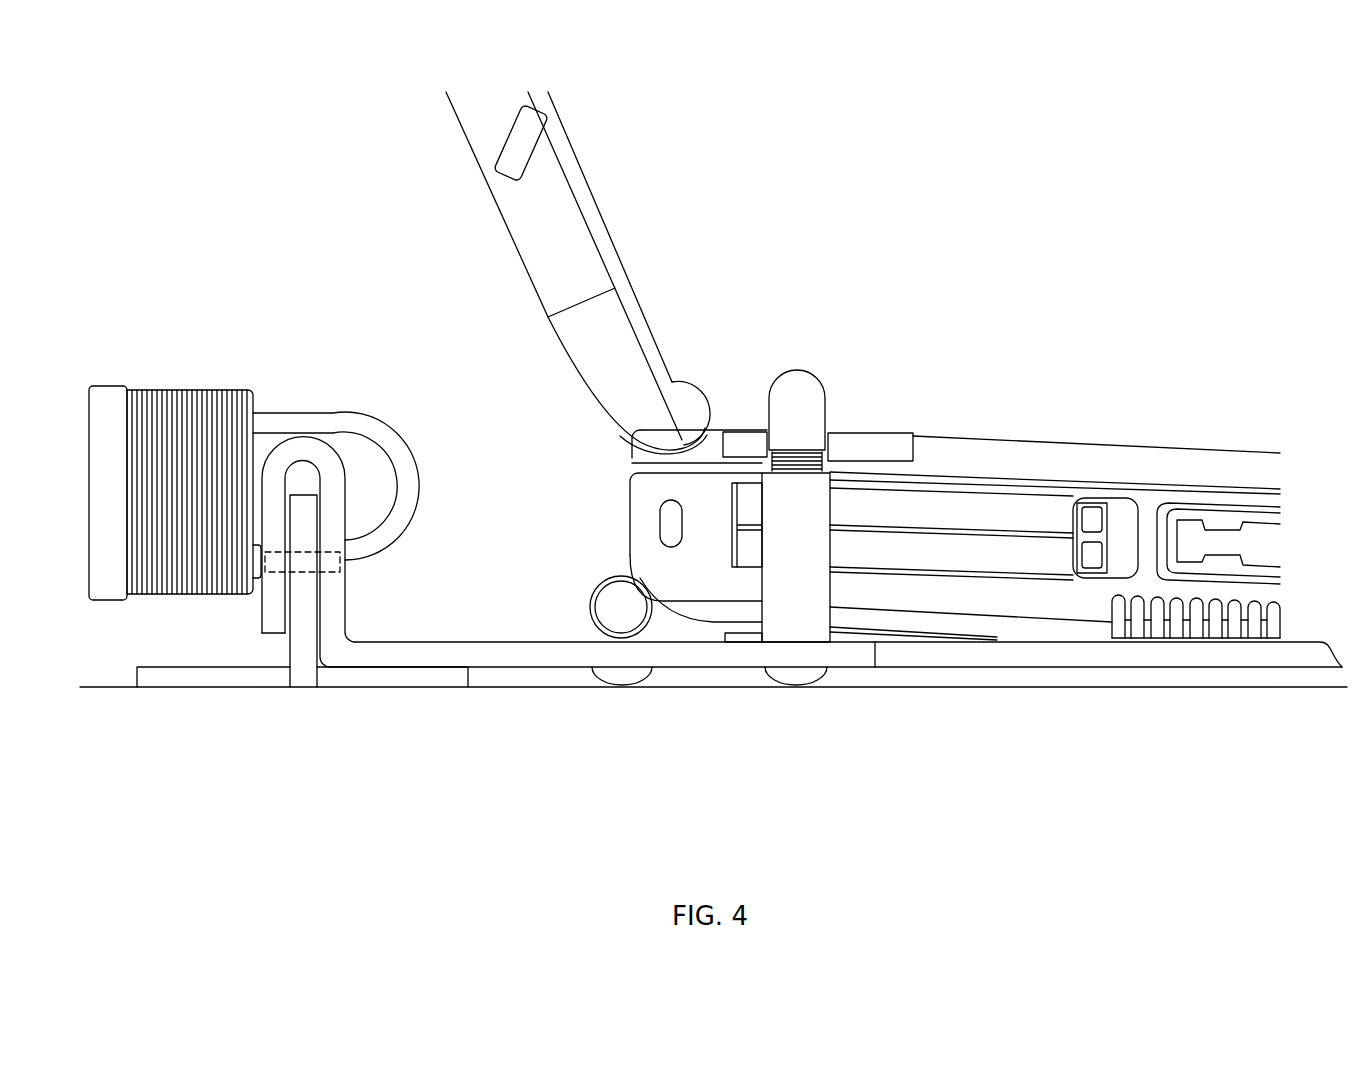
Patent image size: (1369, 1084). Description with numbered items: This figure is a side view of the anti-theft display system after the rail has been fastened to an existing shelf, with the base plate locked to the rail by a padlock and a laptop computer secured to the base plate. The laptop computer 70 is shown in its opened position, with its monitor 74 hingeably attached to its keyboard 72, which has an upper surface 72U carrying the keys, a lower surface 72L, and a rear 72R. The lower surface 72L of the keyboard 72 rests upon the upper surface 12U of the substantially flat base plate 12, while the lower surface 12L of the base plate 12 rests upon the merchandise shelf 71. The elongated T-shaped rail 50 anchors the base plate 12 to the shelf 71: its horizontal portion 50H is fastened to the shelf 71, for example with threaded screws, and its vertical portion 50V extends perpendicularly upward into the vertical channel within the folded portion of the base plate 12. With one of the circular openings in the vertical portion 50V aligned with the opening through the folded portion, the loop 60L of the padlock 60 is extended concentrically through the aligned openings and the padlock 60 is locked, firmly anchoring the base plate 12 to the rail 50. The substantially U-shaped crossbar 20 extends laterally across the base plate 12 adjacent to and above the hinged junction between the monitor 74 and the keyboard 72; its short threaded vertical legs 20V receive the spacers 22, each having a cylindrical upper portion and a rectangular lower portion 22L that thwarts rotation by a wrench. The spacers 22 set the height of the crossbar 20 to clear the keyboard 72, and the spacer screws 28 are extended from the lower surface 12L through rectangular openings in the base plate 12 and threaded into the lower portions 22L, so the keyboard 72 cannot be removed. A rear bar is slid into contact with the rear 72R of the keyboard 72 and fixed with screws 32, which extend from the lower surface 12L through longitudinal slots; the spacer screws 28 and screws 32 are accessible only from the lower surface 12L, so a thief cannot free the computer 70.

The base plate 12 is at (836, 662).
The upper surface of base plate 12U is at (410, 641).
The lower surface of base plate 12L is at (488, 669).
The crossbar 20 is at (814, 484).
The vertical legs of crossbar 20V is at (826, 418).
The spacer 22 is at (714, 611).
The lower portion of spacer 22L is at (757, 633).
The spacer screw 28 is at (828, 684).
The screw 32 is at (593, 686).
The rail 50 is at (300, 677).
The vertical portion of rail 50V is at (288, 652).
The horizontal portion of rail 50H is at (205, 677).
The padlock 60 is at (197, 392).
The loop of padlock 60L is at (377, 425).
The laptop computer 70 is at (907, 576).
The merchandise shelf 71 is at (108, 685).
The keyboard 72 is at (907, 576).
The upper surface of keyboard 72U is at (1115, 446).
The rear of keyboard 72R is at (630, 512).
The lower surface of keyboard 72L is at (873, 627).
The monitor 74 is at (533, 238).